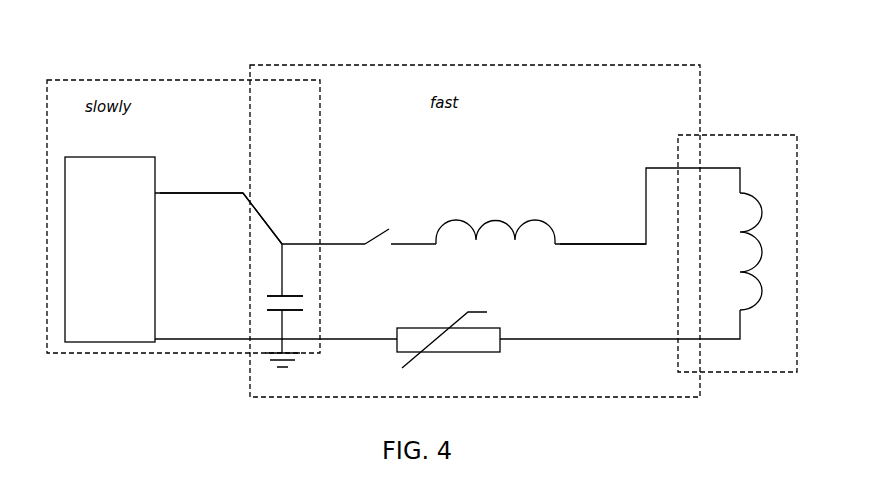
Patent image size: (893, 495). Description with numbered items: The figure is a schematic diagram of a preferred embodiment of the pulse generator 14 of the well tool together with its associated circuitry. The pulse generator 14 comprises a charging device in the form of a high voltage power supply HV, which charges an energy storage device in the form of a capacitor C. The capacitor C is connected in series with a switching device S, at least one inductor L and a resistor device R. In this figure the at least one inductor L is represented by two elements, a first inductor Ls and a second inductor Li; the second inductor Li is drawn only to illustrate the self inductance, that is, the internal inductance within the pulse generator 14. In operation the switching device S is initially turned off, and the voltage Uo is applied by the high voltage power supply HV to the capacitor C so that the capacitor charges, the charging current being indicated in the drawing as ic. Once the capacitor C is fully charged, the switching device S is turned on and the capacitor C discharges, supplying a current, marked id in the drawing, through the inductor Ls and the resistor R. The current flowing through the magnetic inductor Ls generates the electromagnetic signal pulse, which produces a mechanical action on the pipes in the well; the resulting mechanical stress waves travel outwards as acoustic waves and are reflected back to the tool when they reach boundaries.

The pulse generator 14 is at (188, 62).
The high voltage power supply HV is at (201, 180).
The charging current ic is at (263, 258).
The capacitor C is at (282, 305).
The voltage Uo is at (259, 301).
The switching device S is at (389, 227).
The second inductor Li is at (495, 215).
The inductor L is at (727, 215).
The first inductor Ls is at (760, 185).
The discharge current id is at (633, 267).
The resistor device R is at (448, 331).